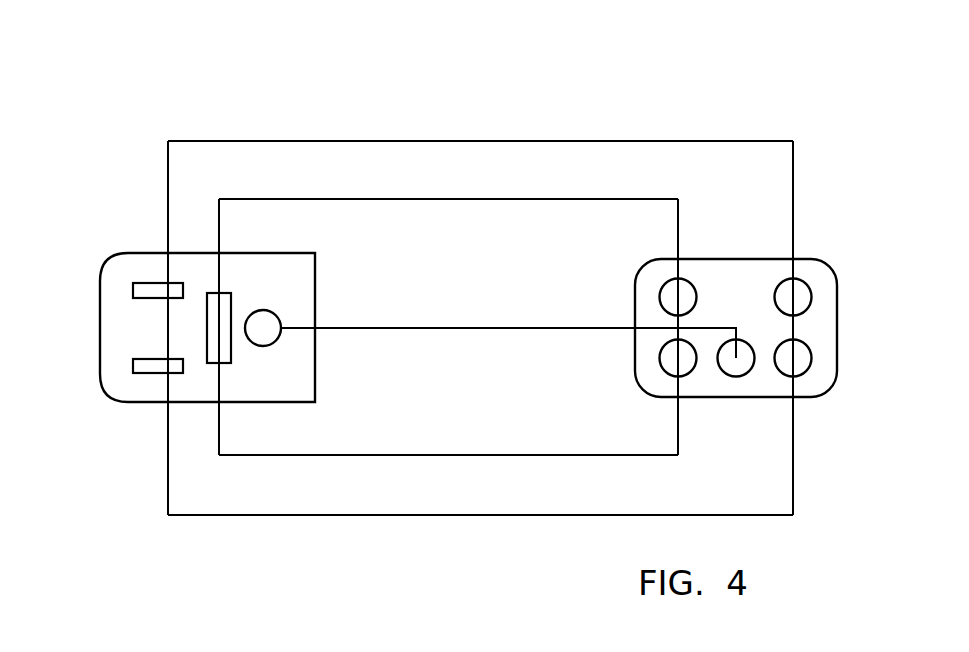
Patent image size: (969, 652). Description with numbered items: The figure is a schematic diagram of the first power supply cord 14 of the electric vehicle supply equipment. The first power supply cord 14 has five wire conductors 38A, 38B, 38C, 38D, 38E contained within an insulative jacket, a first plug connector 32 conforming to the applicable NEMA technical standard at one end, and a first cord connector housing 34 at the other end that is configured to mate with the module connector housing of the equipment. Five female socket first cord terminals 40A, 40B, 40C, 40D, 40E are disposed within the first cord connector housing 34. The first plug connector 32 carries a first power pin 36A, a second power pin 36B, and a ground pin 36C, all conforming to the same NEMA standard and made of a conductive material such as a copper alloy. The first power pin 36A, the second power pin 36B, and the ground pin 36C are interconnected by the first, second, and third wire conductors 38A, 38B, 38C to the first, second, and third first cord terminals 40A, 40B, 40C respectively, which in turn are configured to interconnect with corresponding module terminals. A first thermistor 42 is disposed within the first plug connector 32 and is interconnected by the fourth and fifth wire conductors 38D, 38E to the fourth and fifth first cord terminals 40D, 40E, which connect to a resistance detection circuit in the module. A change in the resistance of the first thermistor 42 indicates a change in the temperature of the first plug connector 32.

The first power supply cord 14 is at (687, 122).
The first plug connector 32 is at (153, 253).
The first cord connector housing 34 is at (838, 292).
The first power pin 36A is at (146, 283).
The second power pin 36B is at (146, 373).
The ground pin 36C is at (277, 318).
The first wire conductor 38A is at (440, 141).
The second wire conductor 38B is at (462, 515).
The third wire conductor 38C is at (527, 328).
The fourth wire conductor 38D is at (537, 199).
The fifth wire conductor 38E is at (395, 455).
The first first cord terminal 40A is at (785, 290).
The second first cord terminal 40B is at (802, 370).
The third first cord terminal 40C is at (745, 368).
The fourth first cord terminal 40D is at (685, 290).
The fifth first cord terminal 40E is at (688, 368).
The first thermistor 42 is at (227, 293).